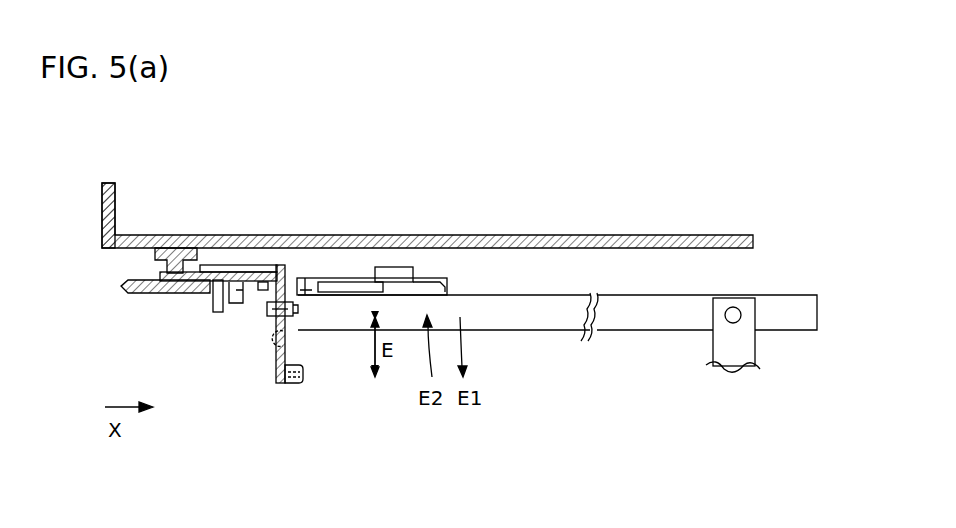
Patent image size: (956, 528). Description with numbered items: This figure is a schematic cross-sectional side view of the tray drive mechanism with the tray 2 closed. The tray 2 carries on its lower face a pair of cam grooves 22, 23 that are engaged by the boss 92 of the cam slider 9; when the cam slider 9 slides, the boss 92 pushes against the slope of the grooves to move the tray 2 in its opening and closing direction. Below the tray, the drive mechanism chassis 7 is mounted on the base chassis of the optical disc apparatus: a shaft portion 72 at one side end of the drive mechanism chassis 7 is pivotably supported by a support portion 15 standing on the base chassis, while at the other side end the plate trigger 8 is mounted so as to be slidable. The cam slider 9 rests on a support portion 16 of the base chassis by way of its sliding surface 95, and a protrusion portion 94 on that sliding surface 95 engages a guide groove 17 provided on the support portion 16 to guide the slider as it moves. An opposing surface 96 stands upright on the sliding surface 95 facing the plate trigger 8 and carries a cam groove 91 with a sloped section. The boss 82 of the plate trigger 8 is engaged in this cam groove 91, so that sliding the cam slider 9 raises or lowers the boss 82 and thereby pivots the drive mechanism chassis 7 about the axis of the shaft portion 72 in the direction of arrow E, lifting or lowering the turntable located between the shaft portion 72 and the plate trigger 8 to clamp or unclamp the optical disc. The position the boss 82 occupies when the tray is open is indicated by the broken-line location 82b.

The tray 2 is at (580, 232).
The cam groove 22 is at (135, 196).
The cam groove 23 is at (140, 236).
The boss 92 is at (175, 250).
The cam slider 9 is at (262, 268).
The sliding surface 95 is at (227, 276).
The cam groove 91 is at (275, 325).
The opposing surface 96 is at (275, 375).
The support portion 16 is at (152, 329).
The guide groove 17 is at (123, 294).
The protrusion portion 94 is at (213, 310).
The boss 82 is at (266, 308).
The boss position in tray-open state 82b is at (285, 339).
The drive mechanism chassis 7 is at (621, 338).
The plate trigger 8 is at (312, 290).
The support portion 15 is at (745, 349).
The shaft portion 72 is at (740, 308).